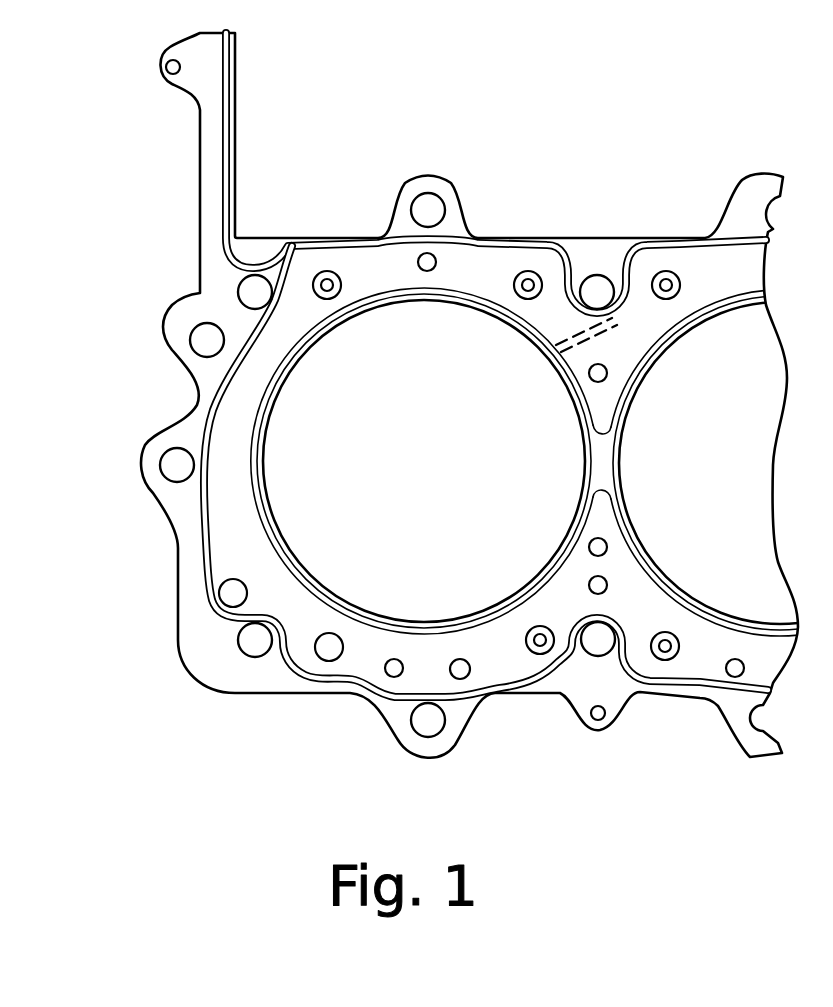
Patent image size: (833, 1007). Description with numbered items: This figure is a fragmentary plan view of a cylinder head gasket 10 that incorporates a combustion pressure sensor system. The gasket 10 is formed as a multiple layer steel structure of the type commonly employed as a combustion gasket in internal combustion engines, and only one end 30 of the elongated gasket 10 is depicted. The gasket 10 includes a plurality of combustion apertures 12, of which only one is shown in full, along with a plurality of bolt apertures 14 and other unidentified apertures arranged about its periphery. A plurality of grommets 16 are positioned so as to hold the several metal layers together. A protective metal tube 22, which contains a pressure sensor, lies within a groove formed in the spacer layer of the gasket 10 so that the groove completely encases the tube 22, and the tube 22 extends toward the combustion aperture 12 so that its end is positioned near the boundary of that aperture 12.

The cylinder head gasket 10 is at (359, 200).
The combustion aperture 12 is at (302, 575).
The bolt aperture 14 is at (199, 322).
The grommet 16 is at (167, 60).
The protective metal tube 22 is at (575, 333).
The end of the gasket 30 is at (193, 552).